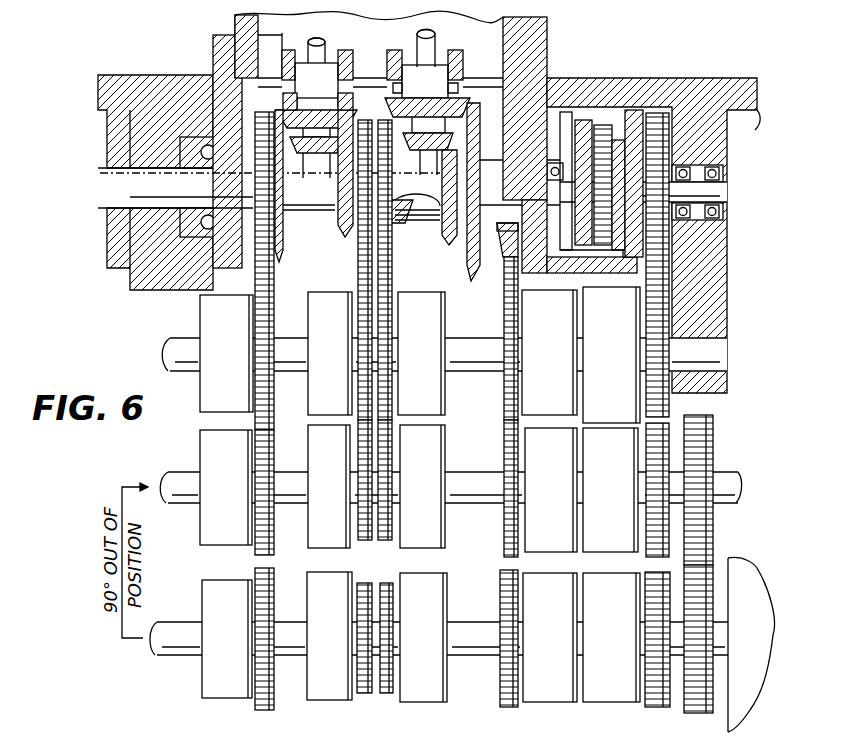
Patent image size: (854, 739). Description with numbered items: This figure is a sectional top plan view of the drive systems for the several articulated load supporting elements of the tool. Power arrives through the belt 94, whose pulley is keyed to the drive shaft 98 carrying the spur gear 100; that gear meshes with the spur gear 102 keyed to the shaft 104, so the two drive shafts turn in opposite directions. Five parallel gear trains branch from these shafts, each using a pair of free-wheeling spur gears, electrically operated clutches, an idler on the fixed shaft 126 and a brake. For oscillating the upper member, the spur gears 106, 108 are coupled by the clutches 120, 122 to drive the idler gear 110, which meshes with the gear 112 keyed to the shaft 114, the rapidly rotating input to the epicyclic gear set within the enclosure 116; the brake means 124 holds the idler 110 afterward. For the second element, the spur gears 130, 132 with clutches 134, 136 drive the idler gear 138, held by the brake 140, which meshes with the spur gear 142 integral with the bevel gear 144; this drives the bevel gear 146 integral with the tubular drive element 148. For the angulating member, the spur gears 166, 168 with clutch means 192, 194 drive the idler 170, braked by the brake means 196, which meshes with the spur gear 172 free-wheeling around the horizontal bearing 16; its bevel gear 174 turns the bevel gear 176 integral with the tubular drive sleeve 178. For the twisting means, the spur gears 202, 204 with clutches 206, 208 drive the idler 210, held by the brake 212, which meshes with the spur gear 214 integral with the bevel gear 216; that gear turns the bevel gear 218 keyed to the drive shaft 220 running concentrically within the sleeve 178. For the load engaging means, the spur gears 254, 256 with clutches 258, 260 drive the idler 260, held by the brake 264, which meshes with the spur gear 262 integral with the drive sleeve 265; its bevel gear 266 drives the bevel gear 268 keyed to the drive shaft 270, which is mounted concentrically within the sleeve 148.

The horizontal bearing 16 is at (150, 184).
The belt 94 is at (760, 690).
The drive shaft 98 is at (172, 638).
The spur gear 100 is at (700, 702).
The spur gear 102 is at (713, 517).
The shaft 104 is at (177, 478).
The spur gear 106 is at (660, 700).
The spur gear 108 is at (657, 518).
The idler gear 110 is at (647, 363).
The gear 112 is at (663, 250).
The shaft 114 is at (716, 192).
The epicyclic gear set enclosure 116 is at (609, 104).
The clutch 120 is at (620, 688).
The clutch 122 is at (622, 535).
The brake means 124 is at (637, 414).
The fixed shaft 126 is at (170, 347).
The spur gear 130 is at (510, 700).
The spur gear 132 is at (507, 508).
The clutch 134 is at (557, 690).
The clutch 136 is at (550, 538).
The idler gear 138 is at (507, 387).
The brake 140 is at (567, 406).
The spur gear 142 is at (478, 260).
The bevel gear 144 is at (470, 285).
The bevel gear 146 is at (425, 81).
The tubular drive element 148 is at (452, 58).
The spur gear 166 is at (263, 702).
The spur gear 168 is at (268, 550).
The idler 170 is at (268, 385).
The spur gear 172 is at (255, 258).
The bevel gear 174 is at (279, 262).
The bevel gear 176 is at (318, 85).
The tubular drive sleeve 178 is at (340, 58).
The clutch means 192 is at (222, 688).
The clutch means 194 is at (208, 453).
The brake means 196 is at (213, 383).
The spur gear 202 is at (367, 695).
The spur gear 204 is at (370, 538).
The clutch 206 is at (333, 693).
The clutch 208 is at (337, 533).
The idler 210 is at (357, 369).
The brake 212 is at (320, 318).
The spur gear 214 is at (365, 262).
The bevel gear 216 is at (358, 246).
The bevel gear 218 is at (319, 157).
The drive shaft 220 is at (323, 44).
The spur gear 254 is at (383, 693).
The spur gear 256 is at (380, 537).
The clutch 258 is at (432, 692).
The clutch 260 is at (390, 320).
The spur gear 262 is at (411, 226).
The brake 264 is at (437, 385).
The drive sleeve 265 is at (422, 238).
The bevel gear 266 is at (440, 226).
The bevel gear 268 is at (428, 150).
The drive shaft 270 is at (432, 42).